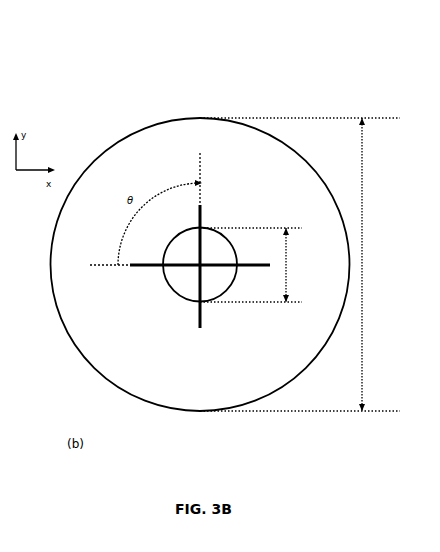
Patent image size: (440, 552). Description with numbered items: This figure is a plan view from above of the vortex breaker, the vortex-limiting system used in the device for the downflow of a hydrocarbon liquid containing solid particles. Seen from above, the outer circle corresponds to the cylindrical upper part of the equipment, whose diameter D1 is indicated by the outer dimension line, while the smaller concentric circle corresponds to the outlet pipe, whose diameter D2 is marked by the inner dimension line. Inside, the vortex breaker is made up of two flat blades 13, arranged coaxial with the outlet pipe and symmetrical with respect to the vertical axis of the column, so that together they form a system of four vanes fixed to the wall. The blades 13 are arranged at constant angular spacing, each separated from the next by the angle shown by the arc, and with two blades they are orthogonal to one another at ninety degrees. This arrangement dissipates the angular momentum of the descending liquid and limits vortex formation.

The flat blade 13 is at (198, 317).
The diameter of cylindrical upper part D1 is at (300, 264).
The diameter of outlet pipe D2 is at (253, 265).